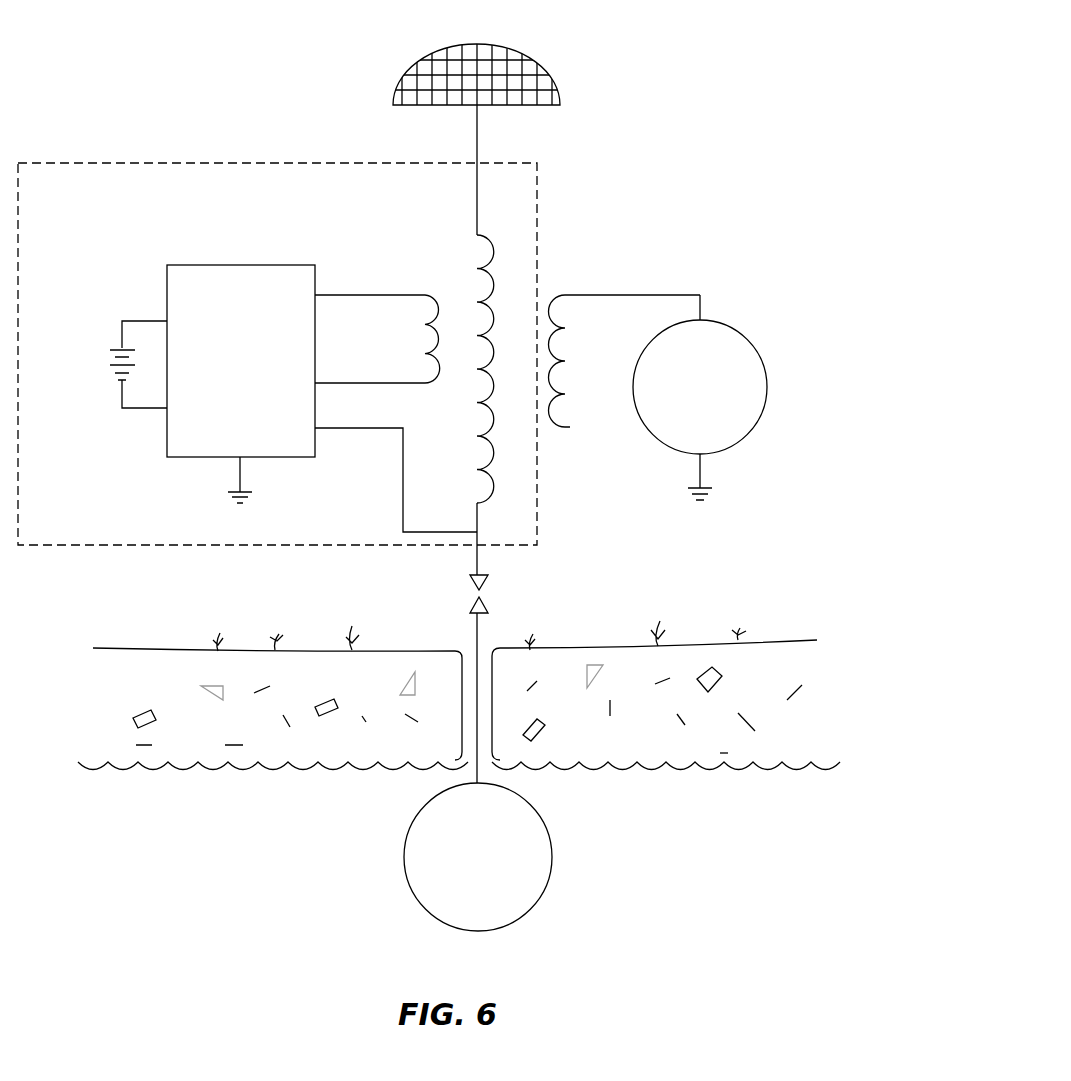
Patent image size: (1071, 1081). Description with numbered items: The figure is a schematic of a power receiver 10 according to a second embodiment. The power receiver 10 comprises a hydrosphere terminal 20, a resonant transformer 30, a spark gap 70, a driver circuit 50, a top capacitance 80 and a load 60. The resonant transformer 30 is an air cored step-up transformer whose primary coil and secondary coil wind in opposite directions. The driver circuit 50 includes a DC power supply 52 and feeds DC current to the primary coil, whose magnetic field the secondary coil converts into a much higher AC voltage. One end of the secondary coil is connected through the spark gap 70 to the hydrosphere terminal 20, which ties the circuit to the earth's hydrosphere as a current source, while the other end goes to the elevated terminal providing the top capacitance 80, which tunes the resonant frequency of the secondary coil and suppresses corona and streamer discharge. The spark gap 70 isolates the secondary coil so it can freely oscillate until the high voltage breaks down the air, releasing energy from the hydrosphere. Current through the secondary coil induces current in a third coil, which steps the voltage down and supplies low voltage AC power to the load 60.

The power receiver 10 is at (692, 60).
The hydrosphere terminal 20 is at (546, 830).
The resonant transformer 30 is at (447, 262).
The driver circuit 50 is at (255, 265).
The DC power supply 52 is at (117, 350).
The load 60 is at (750, 344).
The spark gap 70 is at (515, 580).
The top capacitance 80 is at (422, 66).